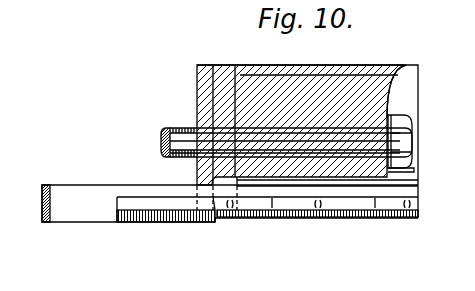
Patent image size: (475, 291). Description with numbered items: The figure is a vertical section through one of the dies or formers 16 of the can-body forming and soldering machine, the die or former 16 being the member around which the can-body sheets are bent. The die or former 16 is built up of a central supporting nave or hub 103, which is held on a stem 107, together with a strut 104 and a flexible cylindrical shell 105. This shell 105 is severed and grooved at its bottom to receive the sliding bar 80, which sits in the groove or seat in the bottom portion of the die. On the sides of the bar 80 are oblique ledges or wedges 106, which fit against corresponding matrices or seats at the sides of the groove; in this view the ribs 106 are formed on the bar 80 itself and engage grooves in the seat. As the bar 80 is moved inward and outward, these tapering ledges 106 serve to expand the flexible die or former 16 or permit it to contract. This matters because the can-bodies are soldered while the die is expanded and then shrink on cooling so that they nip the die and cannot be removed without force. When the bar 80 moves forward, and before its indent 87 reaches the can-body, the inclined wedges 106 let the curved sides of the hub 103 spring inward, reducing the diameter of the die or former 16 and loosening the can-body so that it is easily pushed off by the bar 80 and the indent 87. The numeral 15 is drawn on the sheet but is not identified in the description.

The clamp jaw portion 15 is at (199, 116).
The die or former 16 is at (317, 66).
The sliding bar 80 is at (87, 197).
The indent 87 is at (219, 222).
The central supporting nave or hub 103 is at (393, 165).
The strut 104 is at (381, 103).
The flexible cylindrical shell 105 is at (415, 171).
The oblique ledges or wedges 106 is at (268, 212).
The stem 107 is at (158, 143).